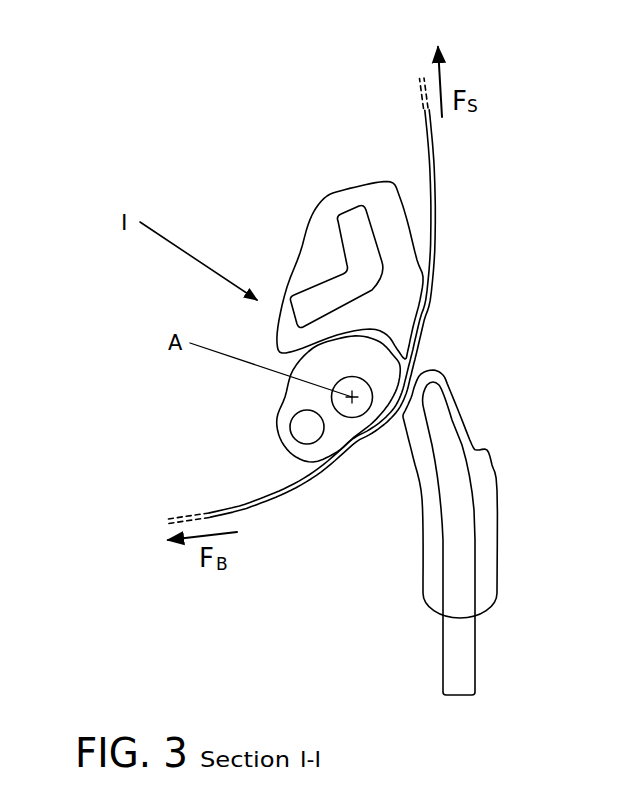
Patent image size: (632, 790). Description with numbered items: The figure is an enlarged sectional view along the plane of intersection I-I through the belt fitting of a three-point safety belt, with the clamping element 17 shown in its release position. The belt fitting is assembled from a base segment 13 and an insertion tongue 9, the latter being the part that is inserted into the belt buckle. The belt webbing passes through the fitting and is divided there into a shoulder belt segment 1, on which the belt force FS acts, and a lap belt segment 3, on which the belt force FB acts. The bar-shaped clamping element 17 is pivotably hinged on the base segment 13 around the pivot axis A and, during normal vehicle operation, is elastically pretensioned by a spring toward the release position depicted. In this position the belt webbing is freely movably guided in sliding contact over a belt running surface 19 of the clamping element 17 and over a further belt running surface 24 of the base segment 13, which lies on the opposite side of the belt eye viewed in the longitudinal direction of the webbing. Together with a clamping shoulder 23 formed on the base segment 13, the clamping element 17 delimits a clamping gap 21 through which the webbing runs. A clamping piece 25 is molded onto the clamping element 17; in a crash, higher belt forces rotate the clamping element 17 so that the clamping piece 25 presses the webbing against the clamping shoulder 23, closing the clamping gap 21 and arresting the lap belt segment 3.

The shoulder belt segment 1 is at (432, 168).
The lap belt segment 3 is at (270, 497).
The insertion tongue 9 is at (474, 658).
The base segment 13 is at (399, 267).
The clamping element 17 is at (285, 398).
The belt running surface 19 is at (353, 440).
The clamping gap 21 is at (412, 398).
The clamping shoulder 23 is at (407, 413).
The belt running surface 24 is at (417, 317).
The clamping piece 25 is at (403, 365).